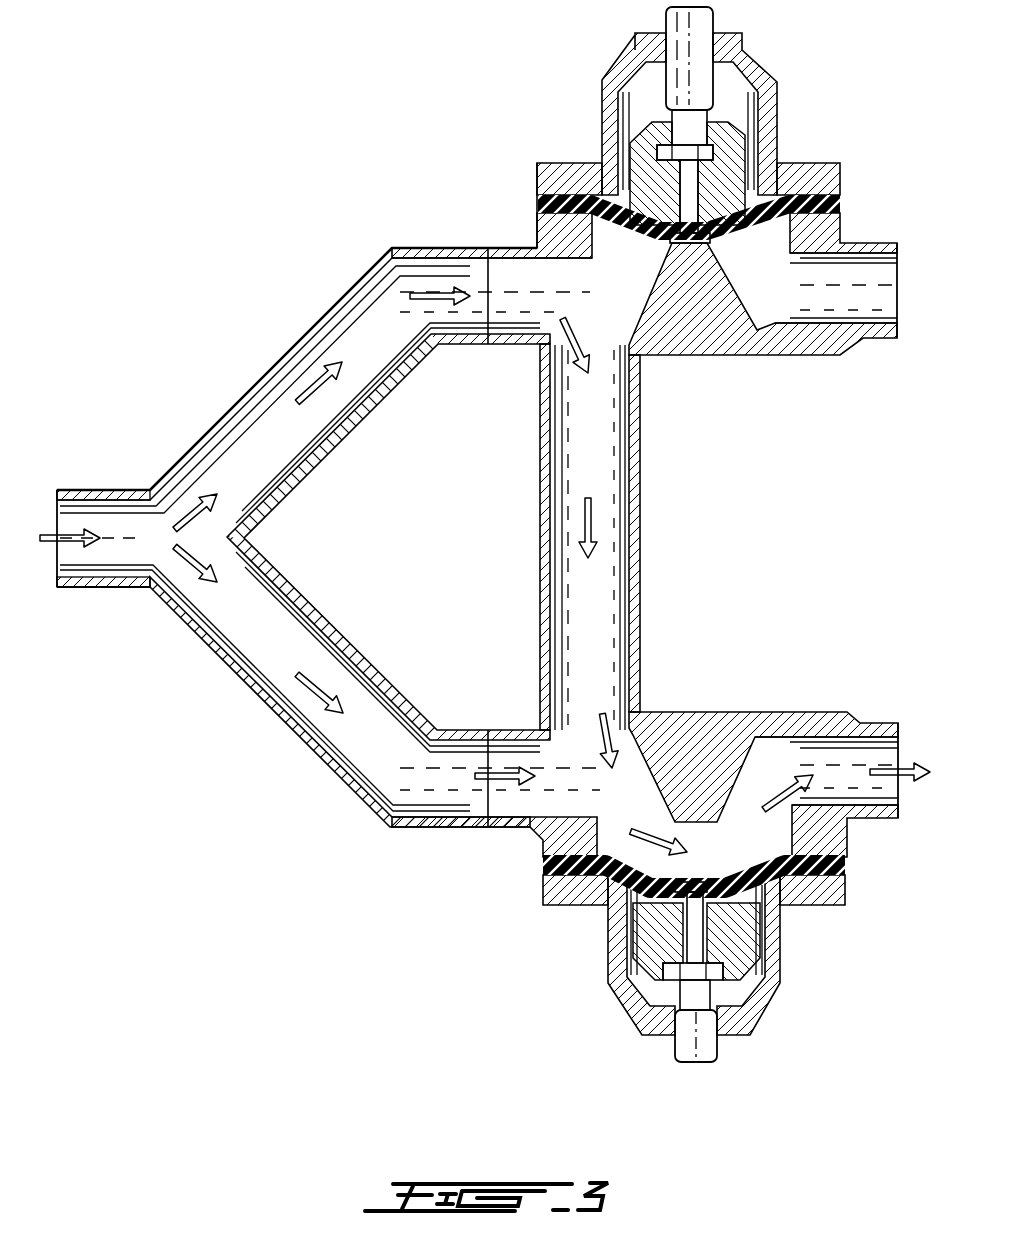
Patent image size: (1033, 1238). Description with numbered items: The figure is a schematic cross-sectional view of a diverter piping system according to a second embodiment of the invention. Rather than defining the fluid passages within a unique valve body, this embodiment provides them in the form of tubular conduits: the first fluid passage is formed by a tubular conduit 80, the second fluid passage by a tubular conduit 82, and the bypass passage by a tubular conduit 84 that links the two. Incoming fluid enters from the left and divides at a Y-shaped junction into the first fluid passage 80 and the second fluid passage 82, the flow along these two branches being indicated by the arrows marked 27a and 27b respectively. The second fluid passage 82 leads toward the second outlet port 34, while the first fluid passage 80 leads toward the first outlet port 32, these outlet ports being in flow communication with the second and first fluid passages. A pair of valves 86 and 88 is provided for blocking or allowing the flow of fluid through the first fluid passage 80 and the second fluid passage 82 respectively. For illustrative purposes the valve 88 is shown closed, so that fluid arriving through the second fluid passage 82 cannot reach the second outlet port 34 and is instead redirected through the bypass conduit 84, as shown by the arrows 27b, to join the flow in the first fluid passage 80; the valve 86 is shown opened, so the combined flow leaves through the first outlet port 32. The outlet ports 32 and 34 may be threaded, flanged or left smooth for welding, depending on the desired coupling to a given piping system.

The valve 88 is at (596, 102).
The valve 86 is at (603, 981).
The tubular conduit 82 is at (358, 428).
The tubular conduit 80 is at (297, 586).
The tubular conduit 84 is at (536, 559).
The first flow path 27b is at (301, 386).
The second flow path 27a is at (303, 691).
The second outlet port 34 is at (902, 289).
The first outlet port 32 is at (905, 754).